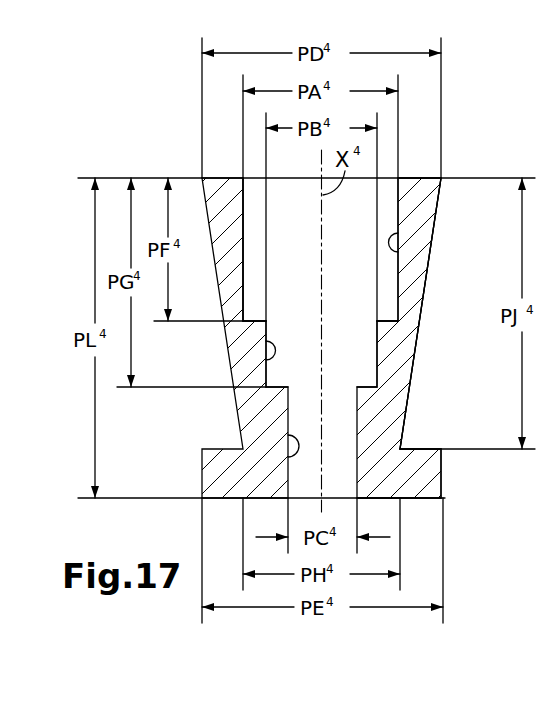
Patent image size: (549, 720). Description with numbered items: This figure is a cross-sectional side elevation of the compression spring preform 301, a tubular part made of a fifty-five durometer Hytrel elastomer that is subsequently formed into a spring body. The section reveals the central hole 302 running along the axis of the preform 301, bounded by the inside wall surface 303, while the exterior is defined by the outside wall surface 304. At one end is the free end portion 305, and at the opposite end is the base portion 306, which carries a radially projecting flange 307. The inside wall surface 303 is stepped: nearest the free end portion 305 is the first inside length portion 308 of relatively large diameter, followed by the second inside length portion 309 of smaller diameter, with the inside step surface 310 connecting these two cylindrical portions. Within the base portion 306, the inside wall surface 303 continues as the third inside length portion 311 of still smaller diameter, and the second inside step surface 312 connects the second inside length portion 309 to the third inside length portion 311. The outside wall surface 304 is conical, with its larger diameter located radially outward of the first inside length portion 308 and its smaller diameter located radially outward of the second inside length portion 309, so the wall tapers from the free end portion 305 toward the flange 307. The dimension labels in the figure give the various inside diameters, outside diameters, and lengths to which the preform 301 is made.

The compression spring preform 301 is at (452, 120).
The central hole 302 is at (312, 226).
The inside wall surface 303 is at (398, 250).
The outside wall surface 304 is at (416, 352).
The free end portion 305 is at (425, 205).
The base portion 306 is at (378, 447).
The flange 307 is at (422, 449).
The first inside length portion 308 is at (245, 267).
The second inside length portion 309 is at (266, 360).
The inside step surface 310 is at (390, 318).
The third inside length portion 311 is at (288, 457).
The second inside step surface 312 is at (365, 386).